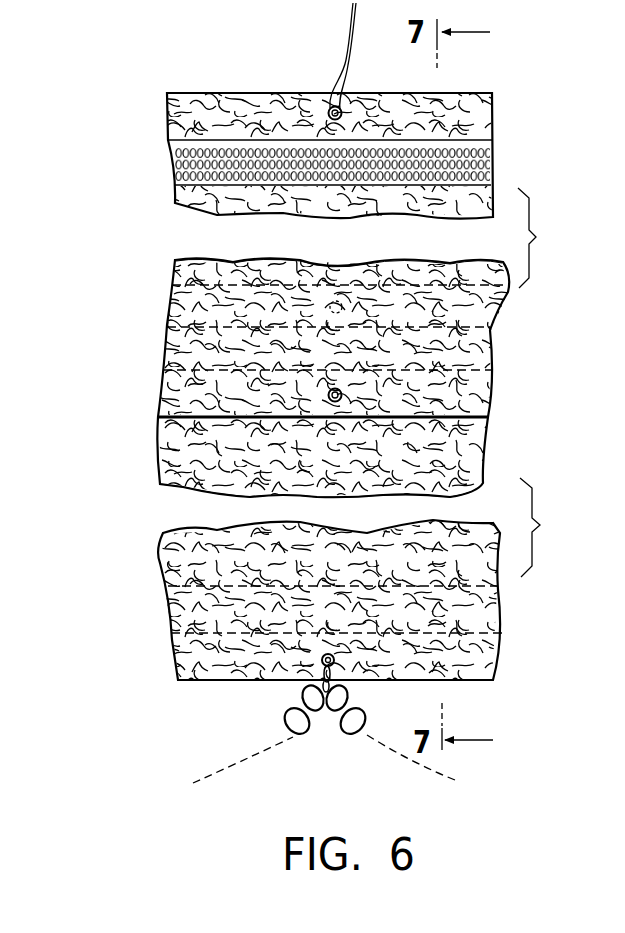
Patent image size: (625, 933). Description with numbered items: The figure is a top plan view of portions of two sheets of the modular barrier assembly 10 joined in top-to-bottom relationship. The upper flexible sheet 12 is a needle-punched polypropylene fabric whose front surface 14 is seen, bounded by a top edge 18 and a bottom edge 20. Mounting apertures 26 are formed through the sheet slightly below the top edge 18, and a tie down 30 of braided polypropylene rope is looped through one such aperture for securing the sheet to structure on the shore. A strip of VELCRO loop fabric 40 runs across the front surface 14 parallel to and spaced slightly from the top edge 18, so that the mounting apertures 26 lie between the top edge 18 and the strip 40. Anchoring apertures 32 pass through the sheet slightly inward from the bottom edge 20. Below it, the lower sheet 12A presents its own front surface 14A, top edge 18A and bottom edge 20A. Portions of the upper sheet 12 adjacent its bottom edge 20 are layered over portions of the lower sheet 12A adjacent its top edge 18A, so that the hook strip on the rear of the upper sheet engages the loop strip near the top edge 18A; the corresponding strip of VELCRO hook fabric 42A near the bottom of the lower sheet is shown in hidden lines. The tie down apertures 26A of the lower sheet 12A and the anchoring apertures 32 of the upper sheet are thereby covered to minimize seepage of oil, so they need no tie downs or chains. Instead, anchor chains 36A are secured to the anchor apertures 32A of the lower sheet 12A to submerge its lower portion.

The modular barrier assembly 10 is at (308, 109).
The flexible sheet 12 is at (322, 359).
The lower sheet 12A is at (322, 458).
The front surface 14 is at (490, 307).
The front surface of lower sheet 14A is at (490, 470).
The top edge 18 is at (232, 95).
The top edge of lower sheet 18A is at (442, 256).
The bottom edge 20 is at (470, 420).
The bottom edge of lower sheet 20A is at (330, 651).
The mounting aperture 26 is at (343, 112).
The tie down aperture of lower sheet 26A is at (331, 297).
The tie down 30 is at (335, 43).
The anchoring aperture 32 is at (329, 394).
The anchor aperture of lower sheet 32A is at (322, 658).
The anchor chain 36A is at (288, 732).
The strip of VELCRO loop fabric 40 is at (488, 142).
The strip of VELCRO hook fabric 42A is at (178, 612).